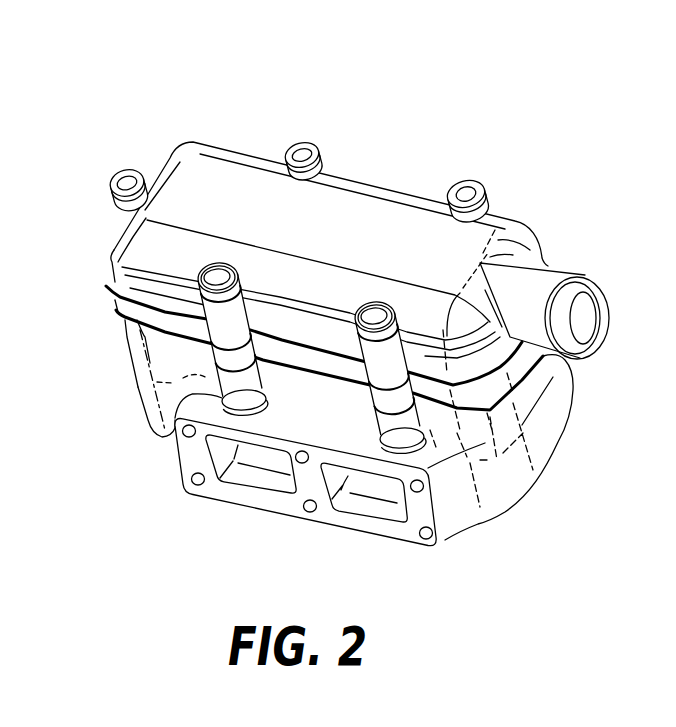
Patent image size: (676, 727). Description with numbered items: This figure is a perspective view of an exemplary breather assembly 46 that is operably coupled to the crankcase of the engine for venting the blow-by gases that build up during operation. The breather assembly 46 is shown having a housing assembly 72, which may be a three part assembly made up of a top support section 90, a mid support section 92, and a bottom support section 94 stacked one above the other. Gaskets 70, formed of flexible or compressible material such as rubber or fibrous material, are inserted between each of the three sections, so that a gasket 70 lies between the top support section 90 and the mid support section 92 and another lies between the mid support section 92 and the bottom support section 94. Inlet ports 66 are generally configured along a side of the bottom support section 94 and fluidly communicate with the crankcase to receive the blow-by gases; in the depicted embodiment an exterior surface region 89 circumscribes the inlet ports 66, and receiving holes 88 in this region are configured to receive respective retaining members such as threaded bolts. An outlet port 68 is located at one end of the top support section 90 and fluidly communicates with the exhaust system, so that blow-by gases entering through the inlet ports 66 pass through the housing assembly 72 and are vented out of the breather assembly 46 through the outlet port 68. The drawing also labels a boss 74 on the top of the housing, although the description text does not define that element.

The breather assembly 46 is at (355, 313).
The inlet ports 66 is at (258, 477).
The outlet port 68 is at (592, 285).
The gaskets 70 is at (106, 286).
The housing assembly 72 is at (352, 207).
The mounting boss 74 is at (130, 172).
The receiving holes 88 is at (430, 536).
The exterior surface region 89 is at (305, 504).
The top support section 90 is at (110, 266).
The mid support section 92 is at (118, 343).
The bottom support section 94 is at (152, 410).